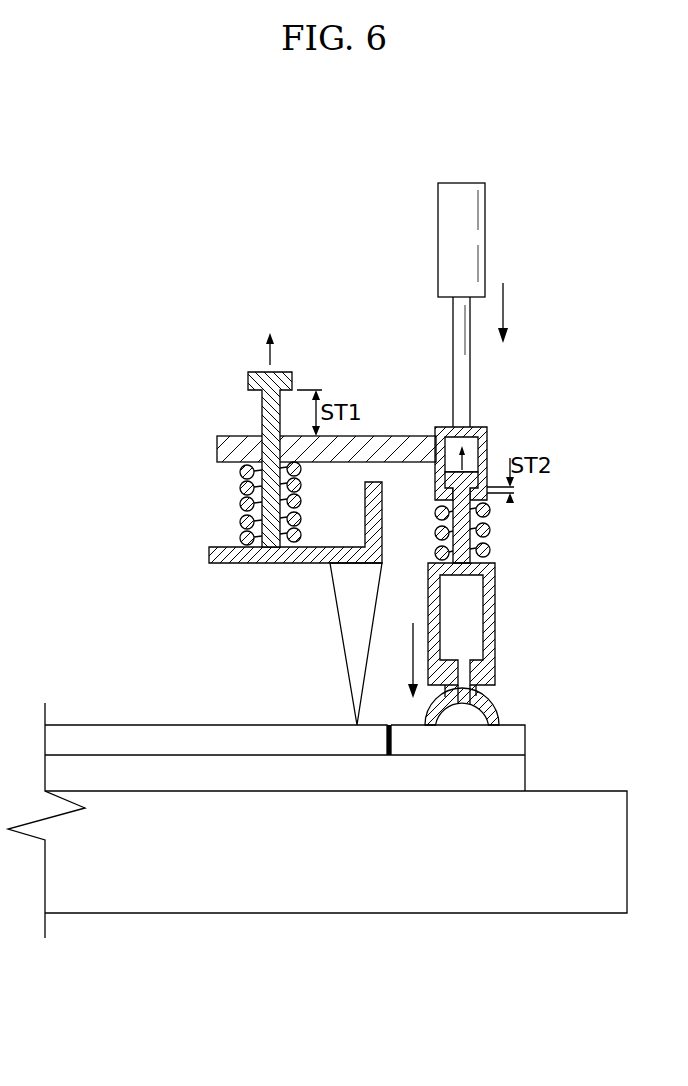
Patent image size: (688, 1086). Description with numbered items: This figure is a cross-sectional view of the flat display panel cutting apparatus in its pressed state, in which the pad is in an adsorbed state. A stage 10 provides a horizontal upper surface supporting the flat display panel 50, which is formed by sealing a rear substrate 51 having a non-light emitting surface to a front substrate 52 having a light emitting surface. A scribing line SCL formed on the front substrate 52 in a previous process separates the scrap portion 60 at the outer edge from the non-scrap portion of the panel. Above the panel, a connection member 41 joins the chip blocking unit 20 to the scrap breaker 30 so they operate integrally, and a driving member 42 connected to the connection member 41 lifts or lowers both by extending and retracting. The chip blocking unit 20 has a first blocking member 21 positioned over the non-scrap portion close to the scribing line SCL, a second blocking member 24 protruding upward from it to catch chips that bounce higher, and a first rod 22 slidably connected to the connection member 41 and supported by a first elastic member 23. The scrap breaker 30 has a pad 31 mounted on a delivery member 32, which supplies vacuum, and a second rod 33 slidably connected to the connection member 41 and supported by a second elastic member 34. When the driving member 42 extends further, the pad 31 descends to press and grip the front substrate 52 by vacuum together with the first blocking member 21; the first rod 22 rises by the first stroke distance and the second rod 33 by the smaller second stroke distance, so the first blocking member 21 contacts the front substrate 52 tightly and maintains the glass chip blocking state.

The stage 10 is at (471, 890).
The chip blocking unit 20 is at (208, 529).
The first blocking member 21 is at (337, 629).
The first rod 22 is at (262, 413).
The first elastic member 23 is at (243, 490).
The second blocking member 24 is at (373, 513).
The scrap breaker 30 is at (519, 576).
The pad 31 is at (497, 668).
The delivery member 32 is at (485, 575).
The second rod 33 is at (463, 520).
The second elastic member 34 is at (483, 533).
The connection member 41 is at (390, 445).
The driving member 42 is at (480, 236).
The flat display panel 50 is at (285, 699).
The rear substrate 51 is at (108, 775).
The front substrate 52 is at (164, 742).
The scrap portion 60 is at (505, 742).
The scribing line SCL is at (385, 738).